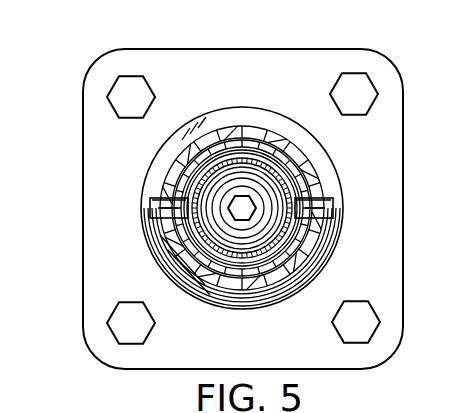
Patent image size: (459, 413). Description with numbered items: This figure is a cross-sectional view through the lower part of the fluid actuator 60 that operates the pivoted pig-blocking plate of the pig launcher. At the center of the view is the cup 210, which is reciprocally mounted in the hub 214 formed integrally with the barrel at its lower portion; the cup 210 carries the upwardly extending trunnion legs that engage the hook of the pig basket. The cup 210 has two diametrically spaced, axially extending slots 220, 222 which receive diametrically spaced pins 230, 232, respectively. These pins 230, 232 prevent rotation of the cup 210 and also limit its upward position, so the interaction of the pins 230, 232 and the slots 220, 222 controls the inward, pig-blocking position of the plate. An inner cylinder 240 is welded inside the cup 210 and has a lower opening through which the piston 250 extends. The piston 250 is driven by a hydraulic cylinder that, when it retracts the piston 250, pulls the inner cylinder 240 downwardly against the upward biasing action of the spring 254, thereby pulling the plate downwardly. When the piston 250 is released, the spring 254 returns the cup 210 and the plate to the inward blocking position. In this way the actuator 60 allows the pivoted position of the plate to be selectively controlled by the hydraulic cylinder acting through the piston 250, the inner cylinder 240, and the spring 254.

The fluid actuator 60 is at (391, 50).
The cup 210 is at (293, 177).
The hub 214 is at (263, 130).
The slot 220 is at (310, 200).
The slot 222 is at (160, 200).
The pin 230 is at (333, 210).
The pin 232 is at (150, 208).
The inner cylinder 240 is at (236, 237).
The piston 250 is at (313, 240).
The spring 254 is at (218, 163).